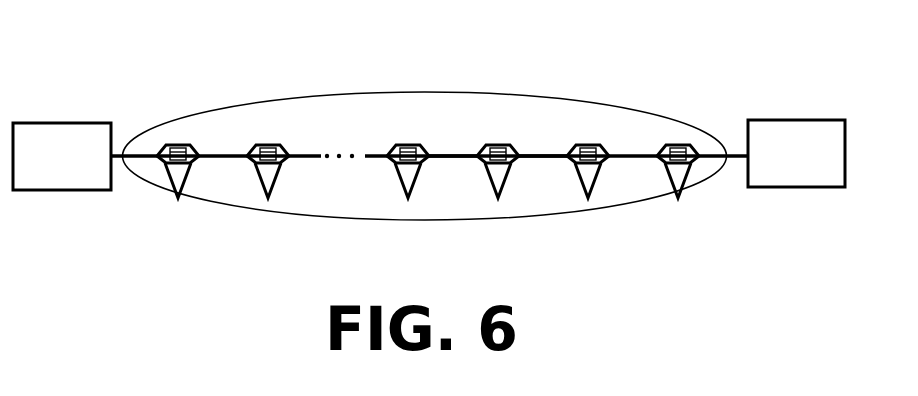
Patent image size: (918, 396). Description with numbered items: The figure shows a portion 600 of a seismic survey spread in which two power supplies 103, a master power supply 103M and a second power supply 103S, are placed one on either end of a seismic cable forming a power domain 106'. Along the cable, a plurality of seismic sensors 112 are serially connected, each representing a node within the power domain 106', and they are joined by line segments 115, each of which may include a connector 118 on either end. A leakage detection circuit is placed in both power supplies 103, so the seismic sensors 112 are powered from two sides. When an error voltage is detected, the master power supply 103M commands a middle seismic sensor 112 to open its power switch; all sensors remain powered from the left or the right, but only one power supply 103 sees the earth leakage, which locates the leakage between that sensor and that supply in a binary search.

The portion of a seismic survey spread 600 is at (103, 34).
The power supply 103 is at (429, 135).
The master power supply 103M is at (112, 125).
The slave power supply 103S is at (747, 121).
The power domain 106' is at (425, 170).
The seismic sensor 112 is at (397, 173).
The line segment 115 is at (455, 152).
The connector 118 is at (525, 152).